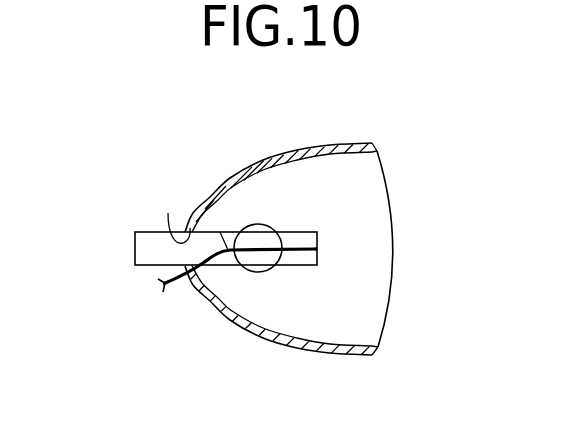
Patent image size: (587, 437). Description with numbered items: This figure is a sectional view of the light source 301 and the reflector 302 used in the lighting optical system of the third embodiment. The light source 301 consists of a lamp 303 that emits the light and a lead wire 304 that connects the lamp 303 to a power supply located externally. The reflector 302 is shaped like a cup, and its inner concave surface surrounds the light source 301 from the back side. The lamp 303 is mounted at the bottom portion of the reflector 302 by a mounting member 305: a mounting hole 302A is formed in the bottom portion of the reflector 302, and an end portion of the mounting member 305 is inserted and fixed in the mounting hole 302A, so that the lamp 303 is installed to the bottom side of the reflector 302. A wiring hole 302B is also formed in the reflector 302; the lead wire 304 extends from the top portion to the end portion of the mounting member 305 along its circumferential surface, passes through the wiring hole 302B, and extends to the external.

The light source 301 is at (276, 215).
The reflector 302 is at (338, 354).
The mounting hole 302A is at (168, 213).
The wiring hole 302B is at (187, 279).
The lamp 303 is at (256, 273).
The lead wire 304 is at (220, 232).
The mounting member 305 is at (152, 266).